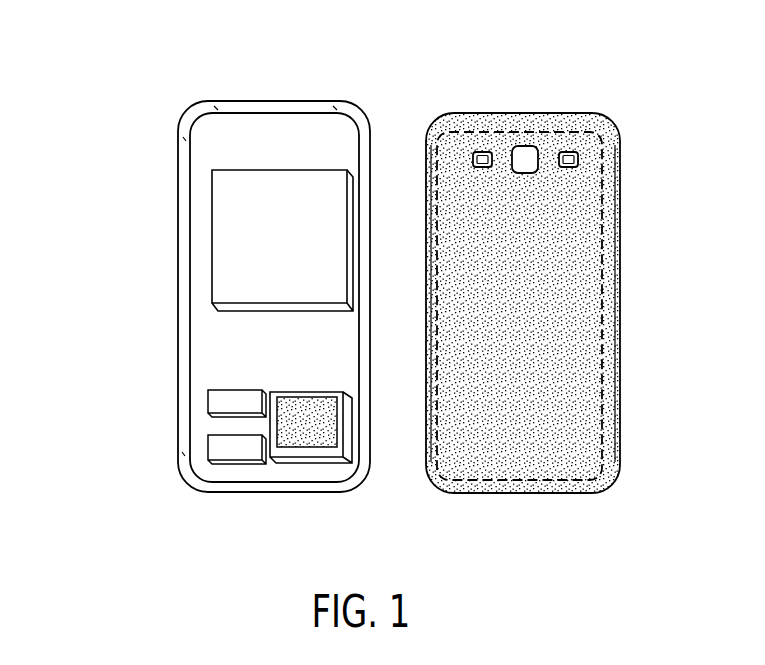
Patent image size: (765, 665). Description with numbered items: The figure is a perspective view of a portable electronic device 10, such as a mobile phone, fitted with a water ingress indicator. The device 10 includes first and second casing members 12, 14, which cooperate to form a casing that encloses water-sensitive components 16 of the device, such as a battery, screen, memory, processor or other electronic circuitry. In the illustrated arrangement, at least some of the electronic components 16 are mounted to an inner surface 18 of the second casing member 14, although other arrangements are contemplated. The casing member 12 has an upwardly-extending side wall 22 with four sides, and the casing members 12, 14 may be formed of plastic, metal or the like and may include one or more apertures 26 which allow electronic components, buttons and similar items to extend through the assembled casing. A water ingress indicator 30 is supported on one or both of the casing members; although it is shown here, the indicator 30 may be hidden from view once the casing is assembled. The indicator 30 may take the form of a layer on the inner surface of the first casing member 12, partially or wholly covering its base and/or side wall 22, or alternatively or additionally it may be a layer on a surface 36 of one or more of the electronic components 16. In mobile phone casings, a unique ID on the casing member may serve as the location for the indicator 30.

The portable electronic device 10 is at (108, 76).
The first casing member 12 is at (620, 323).
The second casing member 14 is at (189, 421).
The water-sensitive components 16 is at (268, 399).
The inner surface 18 is at (207, 132).
The side wall 22 is at (437, 468).
The apertures 26 is at (525, 150).
The water ingress indicator 30 is at (330, 447).
The surface 36 is at (295, 459).